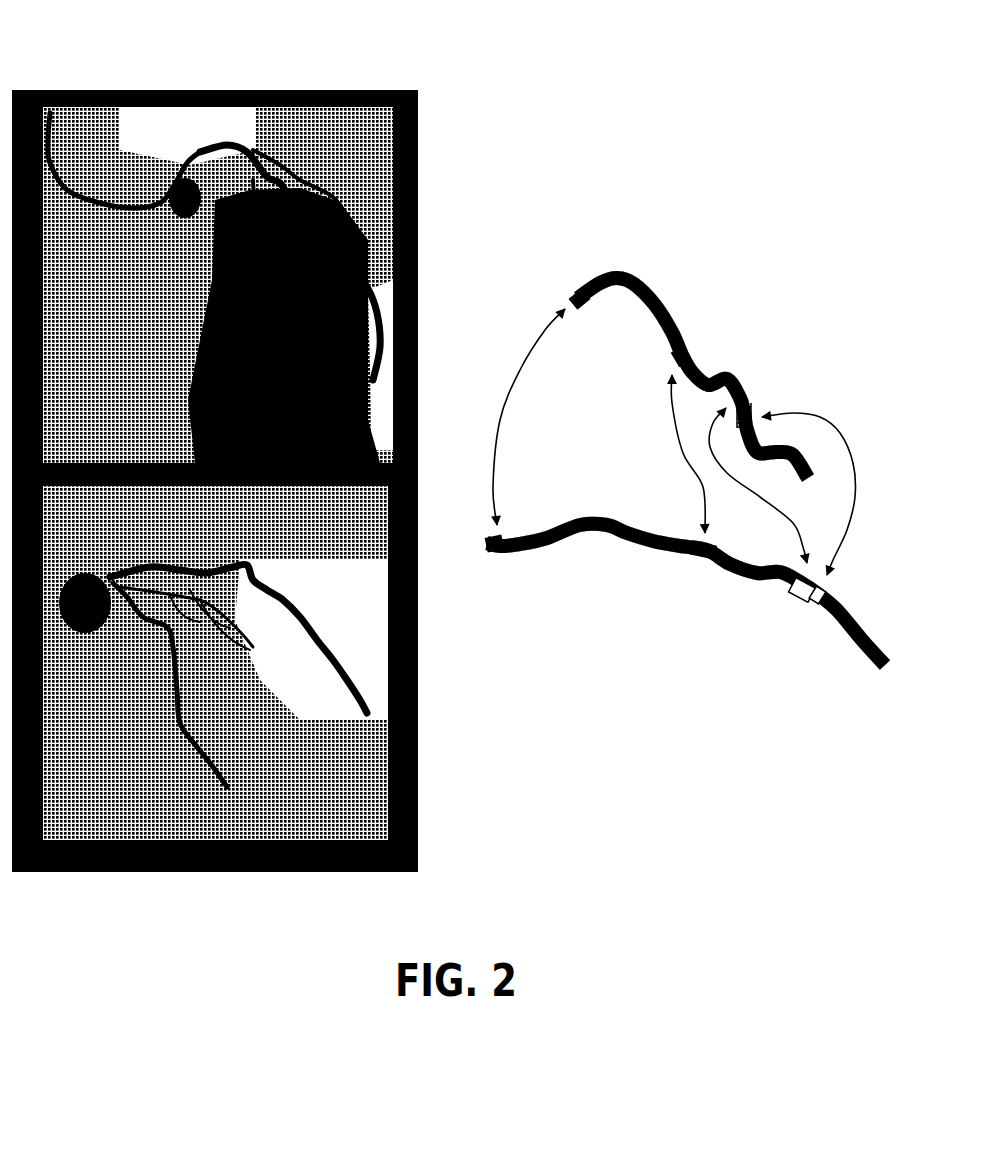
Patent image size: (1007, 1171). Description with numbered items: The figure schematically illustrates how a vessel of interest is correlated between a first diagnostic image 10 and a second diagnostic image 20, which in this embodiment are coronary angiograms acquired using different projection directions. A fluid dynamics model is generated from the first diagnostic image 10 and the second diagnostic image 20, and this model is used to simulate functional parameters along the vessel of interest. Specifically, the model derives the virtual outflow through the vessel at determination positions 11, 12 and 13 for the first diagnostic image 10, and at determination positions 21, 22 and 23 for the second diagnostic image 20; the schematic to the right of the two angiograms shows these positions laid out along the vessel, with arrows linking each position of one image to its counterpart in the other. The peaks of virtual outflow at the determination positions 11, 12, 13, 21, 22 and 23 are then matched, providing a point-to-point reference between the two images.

The first diagnostic image 10 is at (424, 774).
The second diagnostic image 20 is at (422, 88).
The determination position 11 is at (507, 563).
The determination position 12 is at (693, 563).
The determination position 13 is at (793, 600).
The determination position 21 is at (576, 293).
The determination position 22 is at (687, 346).
The determination position 23 is at (756, 404).